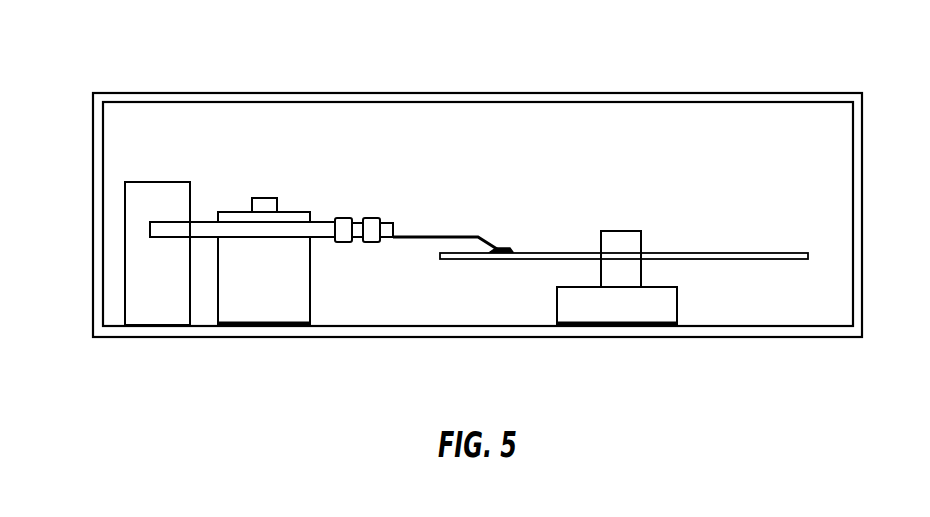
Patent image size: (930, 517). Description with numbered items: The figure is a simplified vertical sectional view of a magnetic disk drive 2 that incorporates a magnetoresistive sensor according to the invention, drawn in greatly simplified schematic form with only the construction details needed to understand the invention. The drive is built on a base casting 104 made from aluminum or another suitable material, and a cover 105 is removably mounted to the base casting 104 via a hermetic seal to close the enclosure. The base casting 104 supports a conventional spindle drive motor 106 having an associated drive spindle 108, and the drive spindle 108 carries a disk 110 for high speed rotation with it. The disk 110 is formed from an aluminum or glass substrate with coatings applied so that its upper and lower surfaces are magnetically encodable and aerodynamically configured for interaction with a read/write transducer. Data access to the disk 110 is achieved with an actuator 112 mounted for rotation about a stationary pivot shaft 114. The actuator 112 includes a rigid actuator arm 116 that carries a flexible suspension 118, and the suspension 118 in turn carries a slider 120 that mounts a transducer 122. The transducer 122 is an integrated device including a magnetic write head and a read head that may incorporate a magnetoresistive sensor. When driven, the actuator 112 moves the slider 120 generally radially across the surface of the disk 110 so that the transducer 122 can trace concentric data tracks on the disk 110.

The scanning probe microscope apparatus 2 is at (114, 44).
The base casting 104 is at (415, 337).
The cover 105 is at (422, 93).
The spindle drive motor 106 is at (678, 307).
The drive spindle 108 is at (618, 230).
The disk 110 is at (752, 252).
The actuator 112 is at (310, 293).
The pivot shaft 114 is at (262, 198).
The actuator arm 116 is at (322, 218).
The suspension 118 is at (425, 233).
The slider 120 is at (510, 246).
The transducer 122 is at (513, 249).